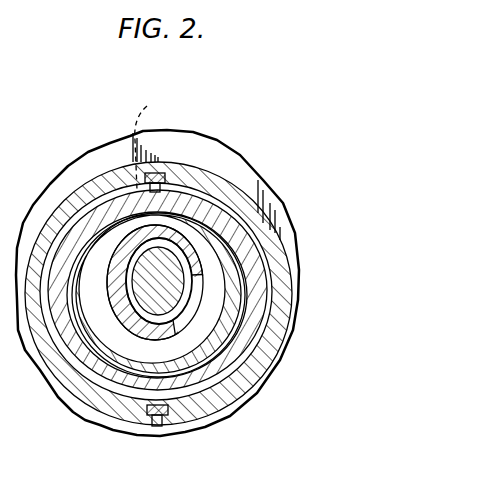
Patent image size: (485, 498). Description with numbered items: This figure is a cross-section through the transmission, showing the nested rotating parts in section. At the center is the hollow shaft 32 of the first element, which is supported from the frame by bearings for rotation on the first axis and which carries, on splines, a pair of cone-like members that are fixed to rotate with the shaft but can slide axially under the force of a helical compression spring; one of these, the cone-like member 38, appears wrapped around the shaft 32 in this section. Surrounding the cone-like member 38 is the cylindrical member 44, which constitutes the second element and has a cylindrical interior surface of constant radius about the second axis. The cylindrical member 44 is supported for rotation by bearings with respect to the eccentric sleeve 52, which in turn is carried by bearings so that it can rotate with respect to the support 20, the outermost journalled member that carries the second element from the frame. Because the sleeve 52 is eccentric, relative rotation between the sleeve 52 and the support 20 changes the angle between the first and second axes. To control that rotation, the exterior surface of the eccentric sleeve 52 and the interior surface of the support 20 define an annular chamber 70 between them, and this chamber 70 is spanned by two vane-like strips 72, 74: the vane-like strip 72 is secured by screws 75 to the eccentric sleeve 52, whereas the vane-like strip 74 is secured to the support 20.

The support 20 is at (261, 223).
The hollow shaft 32 is at (161, 278).
The cone-like member 38 is at (212, 283).
The cylindrical member 44 is at (215, 353).
The eccentric sleeve 52 is at (247, 332).
The annular chamber 70 is at (267, 273).
The vane-like strip 72 is at (170, 175).
The vane-like strip 74 is at (168, 412).
The screws 75 is at (154, 140).